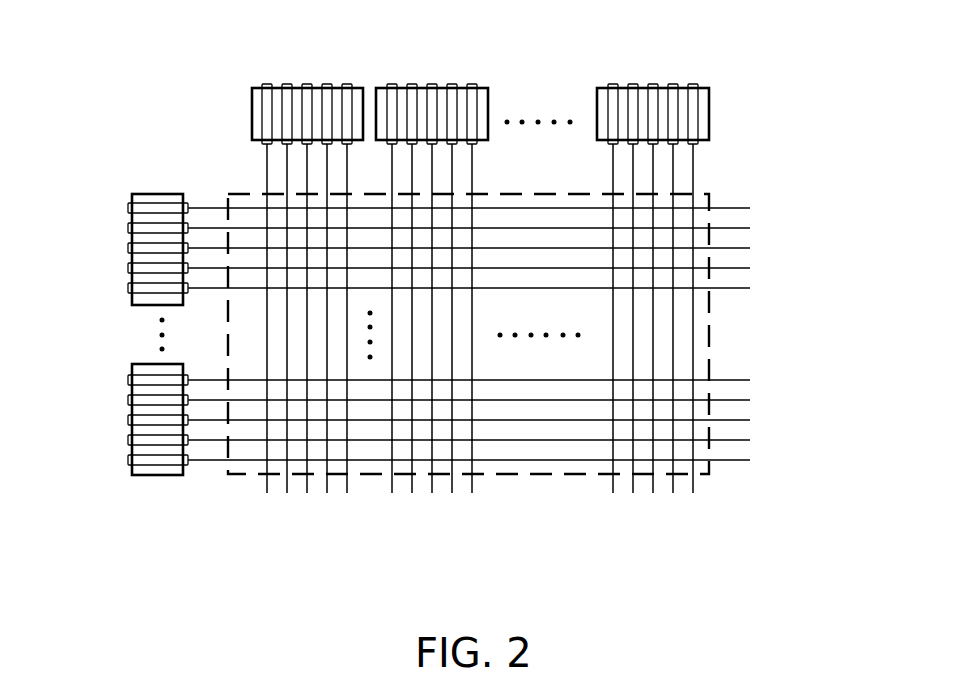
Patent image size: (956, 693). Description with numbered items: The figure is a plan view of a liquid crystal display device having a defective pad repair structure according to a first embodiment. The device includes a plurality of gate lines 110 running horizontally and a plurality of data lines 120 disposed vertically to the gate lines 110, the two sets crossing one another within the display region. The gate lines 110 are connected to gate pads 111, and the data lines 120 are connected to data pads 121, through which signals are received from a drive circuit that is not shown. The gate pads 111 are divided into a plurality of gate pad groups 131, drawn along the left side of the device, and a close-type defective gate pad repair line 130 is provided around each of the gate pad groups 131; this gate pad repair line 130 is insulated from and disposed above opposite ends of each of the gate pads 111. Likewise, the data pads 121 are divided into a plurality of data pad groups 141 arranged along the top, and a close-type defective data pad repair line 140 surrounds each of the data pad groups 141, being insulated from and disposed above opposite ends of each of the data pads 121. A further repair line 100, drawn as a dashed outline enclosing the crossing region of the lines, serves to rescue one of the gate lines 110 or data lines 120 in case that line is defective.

The repair line 100 is at (709, 193).
The gate lines 110 is at (769, 210).
The gate pads 111 is at (128, 208).
The data lines 120 is at (695, 510).
The data pads 121 is at (263, 84).
The defective gate pad repair line 130 is at (123, 216).
The gate pad groups 131 is at (107, 405).
The defective data pad repair line 140 is at (274, 81).
The data pad groups 141 is at (493, 85).